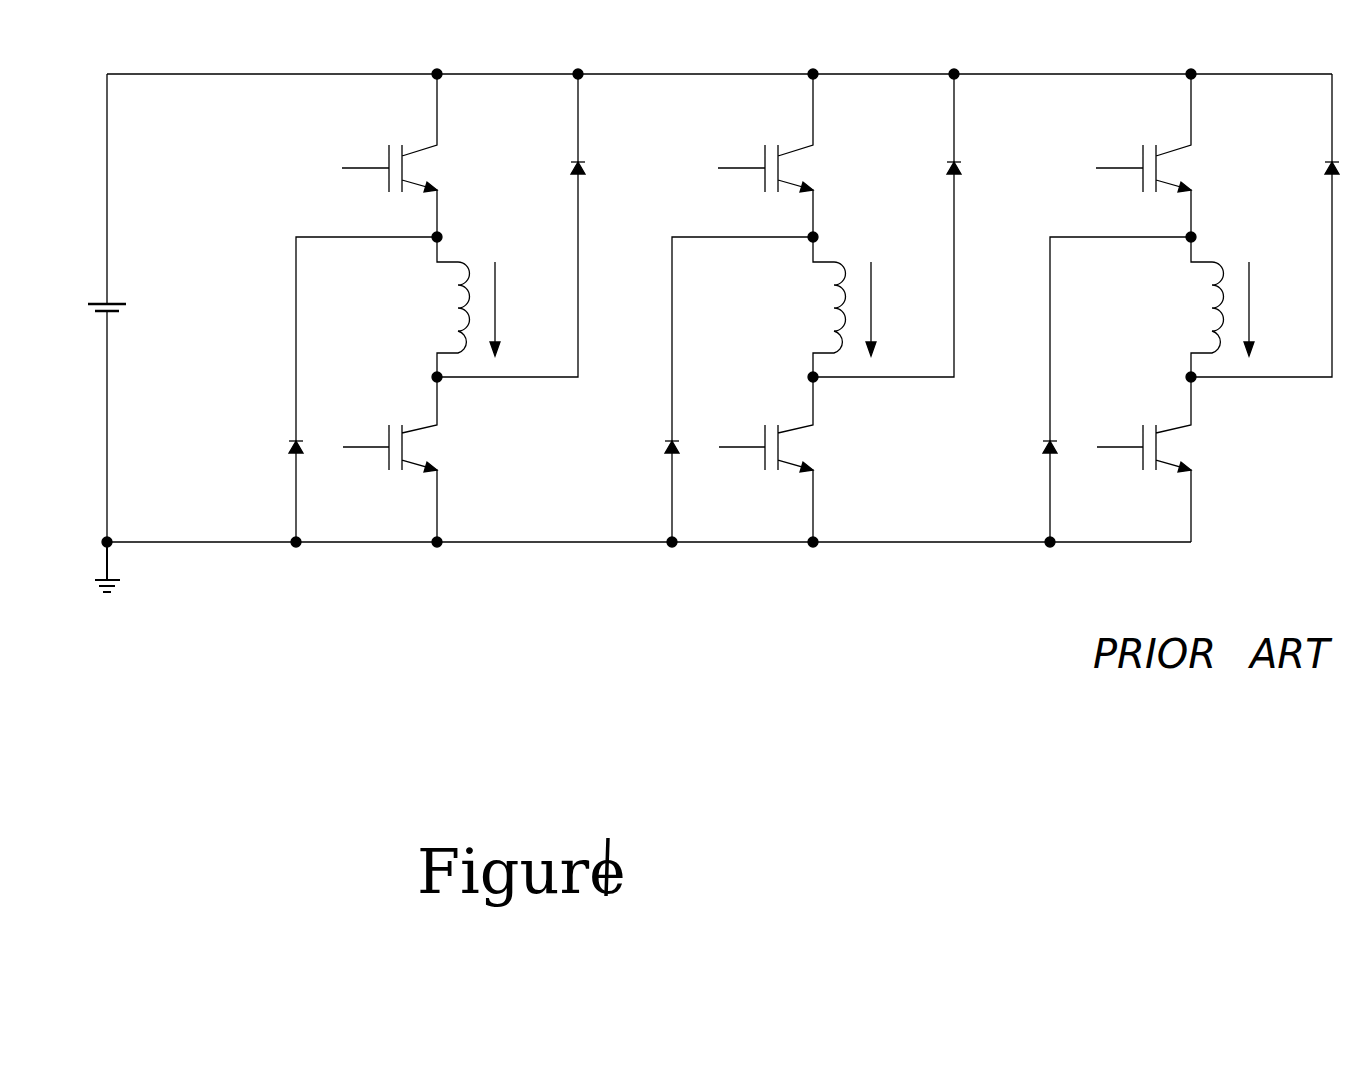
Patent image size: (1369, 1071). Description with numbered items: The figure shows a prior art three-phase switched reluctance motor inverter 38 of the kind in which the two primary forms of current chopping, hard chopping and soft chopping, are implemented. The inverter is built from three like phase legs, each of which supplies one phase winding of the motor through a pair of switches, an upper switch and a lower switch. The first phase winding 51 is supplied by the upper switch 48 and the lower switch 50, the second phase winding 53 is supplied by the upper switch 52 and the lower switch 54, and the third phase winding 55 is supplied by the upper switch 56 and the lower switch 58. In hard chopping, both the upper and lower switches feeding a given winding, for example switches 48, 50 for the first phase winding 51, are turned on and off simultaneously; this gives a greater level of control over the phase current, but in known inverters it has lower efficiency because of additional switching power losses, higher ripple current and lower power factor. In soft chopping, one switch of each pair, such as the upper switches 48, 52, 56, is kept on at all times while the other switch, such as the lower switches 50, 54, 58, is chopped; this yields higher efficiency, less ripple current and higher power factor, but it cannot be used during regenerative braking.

The prior art three-phase SR motor inverter 38 is at (681, 680).
The upper switch 48 is at (372, 143).
The lower switch 50 is at (384, 407).
The first phase winding 51 is at (455, 267).
The upper switch 52 is at (738, 155).
The second phase winding 53 is at (865, 299).
The lower switch 54 is at (748, 459).
The third phase winding 55 is at (1243, 302).
The upper switch 56 is at (1109, 155).
The lower switch 58 is at (1125, 459).